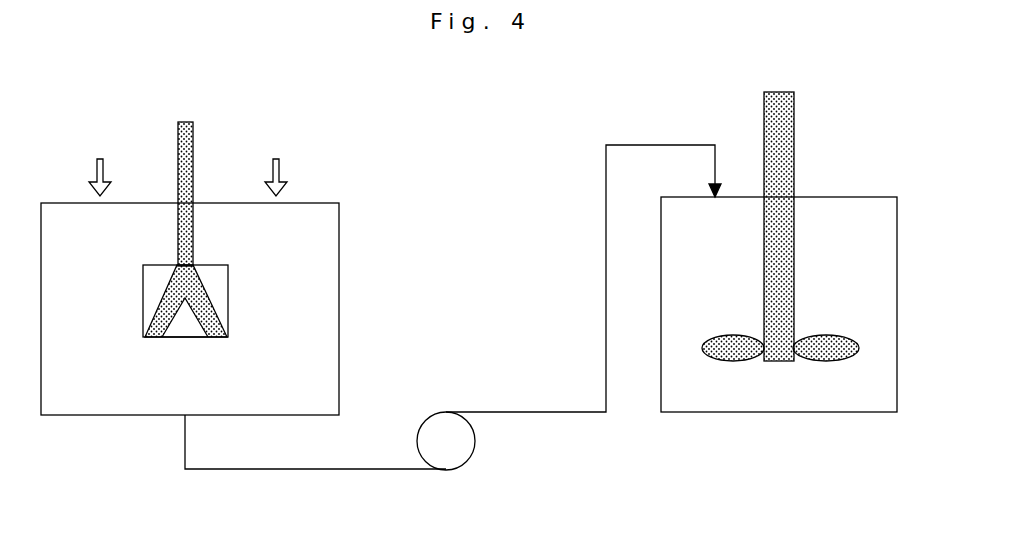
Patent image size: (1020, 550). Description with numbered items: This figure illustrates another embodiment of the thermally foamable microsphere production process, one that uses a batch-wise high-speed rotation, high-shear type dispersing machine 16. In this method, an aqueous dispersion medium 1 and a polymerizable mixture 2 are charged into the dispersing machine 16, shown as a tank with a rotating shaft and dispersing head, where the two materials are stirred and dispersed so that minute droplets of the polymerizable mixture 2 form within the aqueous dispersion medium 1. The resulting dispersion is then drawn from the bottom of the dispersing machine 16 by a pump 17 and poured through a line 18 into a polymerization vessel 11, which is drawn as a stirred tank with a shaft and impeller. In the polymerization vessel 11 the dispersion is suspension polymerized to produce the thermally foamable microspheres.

The aqueous dispersion medium 1 is at (100, 160).
The polymerizable mixture 2 is at (276, 160).
The polymerization vessel 11 is at (772, 412).
The batch-wise high-speed rotation, high-shear type dispersing machine 16 is at (340, 293).
The pump 17 is at (475, 441).
The line 18 is at (606, 265).